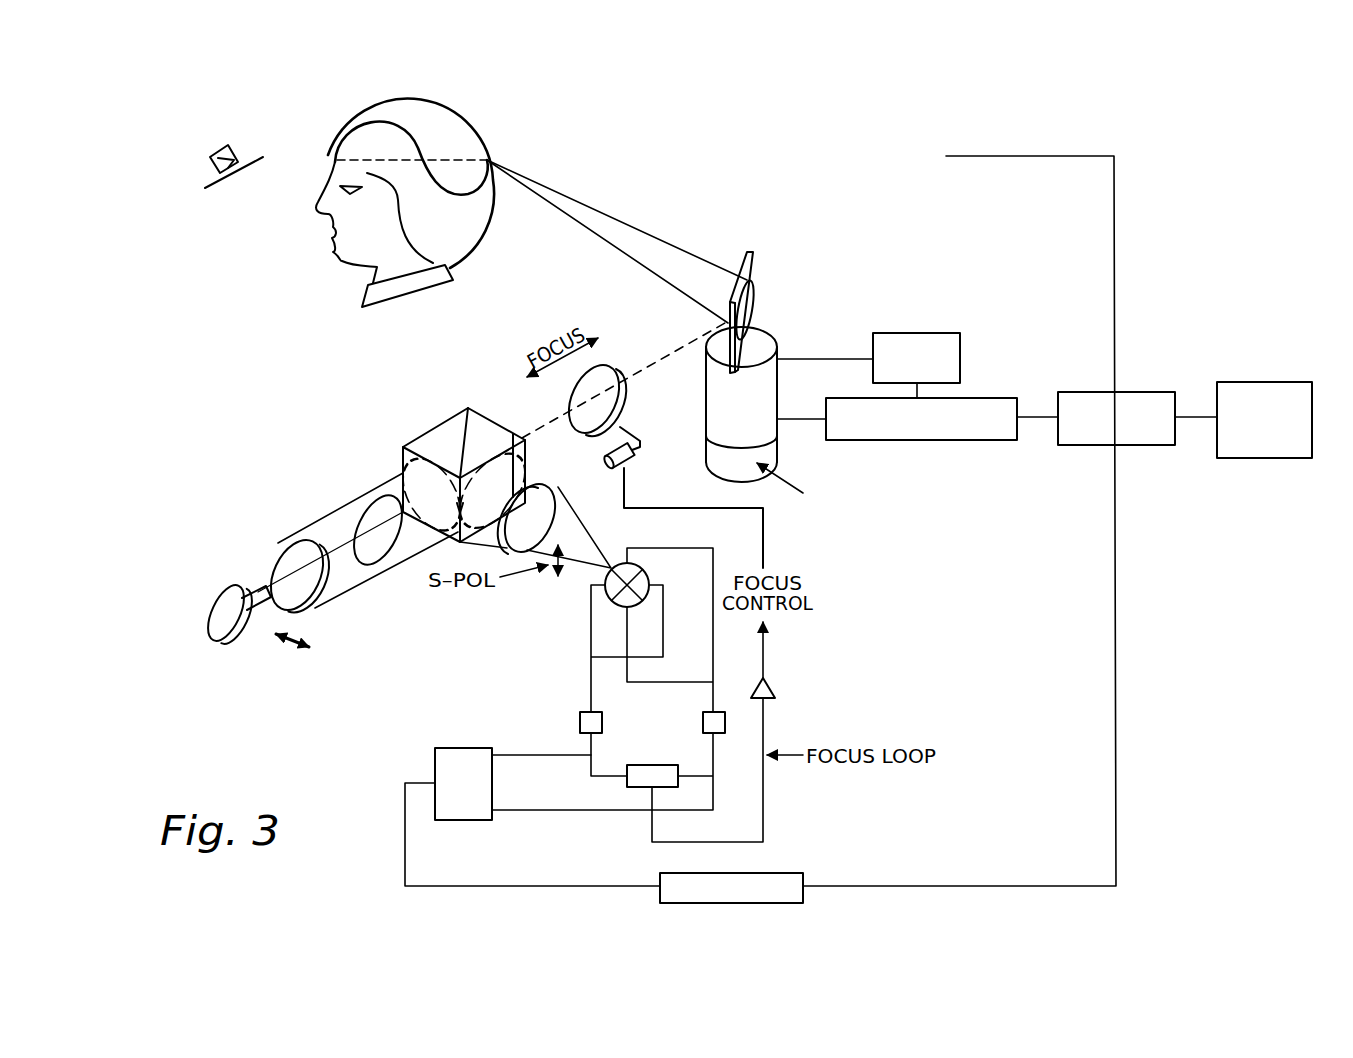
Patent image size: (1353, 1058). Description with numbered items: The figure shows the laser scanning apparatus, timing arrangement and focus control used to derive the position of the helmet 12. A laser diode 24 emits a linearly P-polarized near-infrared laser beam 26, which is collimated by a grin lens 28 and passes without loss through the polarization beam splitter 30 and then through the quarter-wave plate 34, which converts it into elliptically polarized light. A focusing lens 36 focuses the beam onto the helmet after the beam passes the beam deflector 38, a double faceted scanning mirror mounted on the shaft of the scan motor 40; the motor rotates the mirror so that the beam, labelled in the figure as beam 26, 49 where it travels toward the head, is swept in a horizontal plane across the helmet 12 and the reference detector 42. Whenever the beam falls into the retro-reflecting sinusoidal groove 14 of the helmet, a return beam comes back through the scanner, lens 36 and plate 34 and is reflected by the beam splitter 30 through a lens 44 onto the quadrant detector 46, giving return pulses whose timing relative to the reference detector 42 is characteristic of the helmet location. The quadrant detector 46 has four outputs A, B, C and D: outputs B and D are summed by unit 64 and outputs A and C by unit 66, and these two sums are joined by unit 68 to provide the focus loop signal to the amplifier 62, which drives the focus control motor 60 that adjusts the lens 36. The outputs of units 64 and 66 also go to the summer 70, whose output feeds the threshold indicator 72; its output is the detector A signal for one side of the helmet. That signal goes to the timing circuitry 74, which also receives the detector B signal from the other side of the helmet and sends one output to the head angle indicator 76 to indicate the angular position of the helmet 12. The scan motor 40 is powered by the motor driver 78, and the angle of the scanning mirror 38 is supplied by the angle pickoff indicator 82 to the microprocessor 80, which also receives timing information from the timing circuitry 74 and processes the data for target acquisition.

The helmet 12 is at (467, 123).
The sinusoidal groove 14 is at (457, 207).
The reference detector 42 is at (233, 150).
The return beam 49 is at (630, 226).
The laser beam 26 is at (273, 563).
The beam deflector 38 is at (753, 252).
The motor 40 is at (778, 340).
The angle pickoff indicator 82 is at (777, 455).
The focusing lens 36 is at (570, 405).
The focus control motor 60 is at (602, 457).
The detector lens 44 is at (542, 488).
The polarization beam splitter 30 is at (403, 447).
The λ/4 plate 34 is at (458, 406).
The grin lens 28 is at (347, 587).
The laser diode 24 is at (224, 642).
The quadrant detector 46 is at (607, 598).
The amplifier 62 is at (770, 695).
The summing unit 64 is at (580, 722).
The summing unit 66 is at (703, 722).
The joining unit 68 is at (650, 765).
The summer 70 is at (455, 748).
The threshold indicator 72 is at (700, 873).
The timing circuitry 74 is at (1140, 392).
The head angle indicator 76 is at (1272, 382).
The motor driver 78 is at (962, 347).
The microprocessor 80 is at (988, 398).